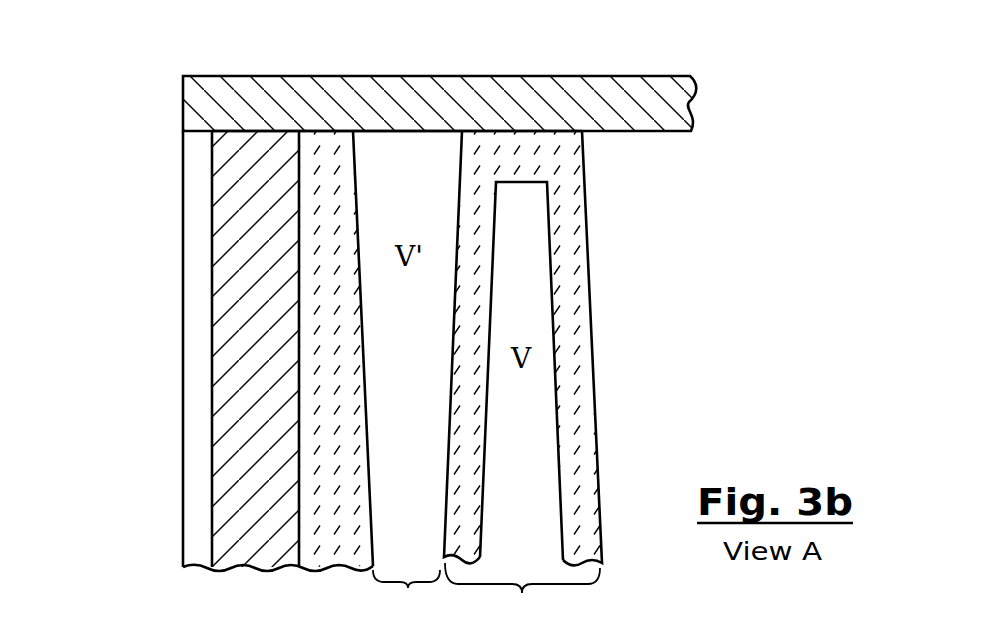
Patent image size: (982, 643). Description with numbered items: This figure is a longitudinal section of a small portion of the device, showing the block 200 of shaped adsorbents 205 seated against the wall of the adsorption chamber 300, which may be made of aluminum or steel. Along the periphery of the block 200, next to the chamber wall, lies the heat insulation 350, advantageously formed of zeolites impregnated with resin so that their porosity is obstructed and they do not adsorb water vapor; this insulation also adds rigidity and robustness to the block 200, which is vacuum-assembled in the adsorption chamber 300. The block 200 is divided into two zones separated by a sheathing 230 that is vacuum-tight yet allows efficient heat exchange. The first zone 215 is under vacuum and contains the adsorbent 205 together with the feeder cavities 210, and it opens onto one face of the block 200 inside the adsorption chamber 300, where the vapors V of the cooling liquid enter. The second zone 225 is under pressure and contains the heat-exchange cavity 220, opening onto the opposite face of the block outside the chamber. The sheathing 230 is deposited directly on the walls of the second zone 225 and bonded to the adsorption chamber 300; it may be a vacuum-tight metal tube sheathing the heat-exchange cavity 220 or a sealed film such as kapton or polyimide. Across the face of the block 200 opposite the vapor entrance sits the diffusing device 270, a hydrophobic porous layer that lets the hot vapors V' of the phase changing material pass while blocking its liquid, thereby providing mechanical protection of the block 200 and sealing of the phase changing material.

The block 200 is at (620, 349).
The adsorbents 205 is at (588, 296).
The feeder cavities 210 is at (533, 453).
The first zone 215 is at (522, 596).
The heat-exchange cavity 220 is at (375, 145).
The second zone 225 is at (406, 599).
The sheathing 230 is at (236, 180).
The diffusing device 270 is at (679, 100).
The adsorption chamber 300 is at (182, 330).
The heat insulation 350 is at (250, 418).